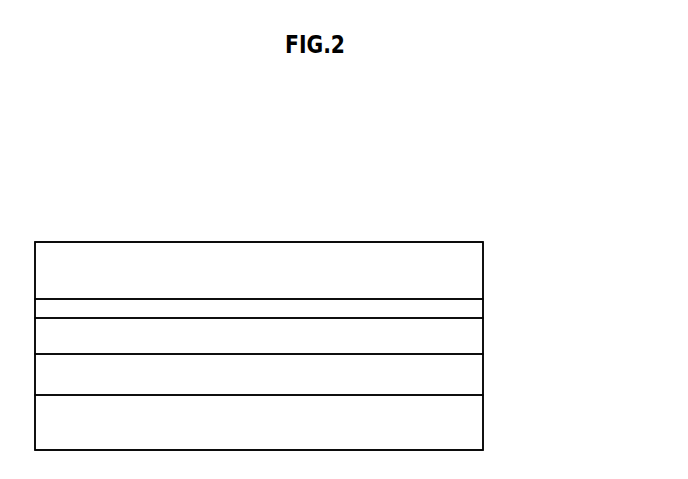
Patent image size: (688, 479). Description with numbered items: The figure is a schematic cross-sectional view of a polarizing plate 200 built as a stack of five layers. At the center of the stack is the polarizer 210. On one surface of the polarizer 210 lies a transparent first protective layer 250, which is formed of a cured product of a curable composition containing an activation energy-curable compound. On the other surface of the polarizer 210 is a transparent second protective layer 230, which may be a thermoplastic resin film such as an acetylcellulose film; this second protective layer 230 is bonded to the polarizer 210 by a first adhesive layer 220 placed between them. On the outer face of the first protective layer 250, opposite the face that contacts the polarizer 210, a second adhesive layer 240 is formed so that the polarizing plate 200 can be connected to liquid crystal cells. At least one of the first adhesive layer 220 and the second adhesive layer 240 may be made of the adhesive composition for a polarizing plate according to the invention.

The polarizing plate 200 is at (448, 208).
The second protective layer 230 is at (483, 269).
The first adhesive layer 220 is at (483, 309).
The polarizer 210 is at (483, 342).
The first protective layer 250 is at (483, 378).
The second adhesive layer 240 is at (483, 419).